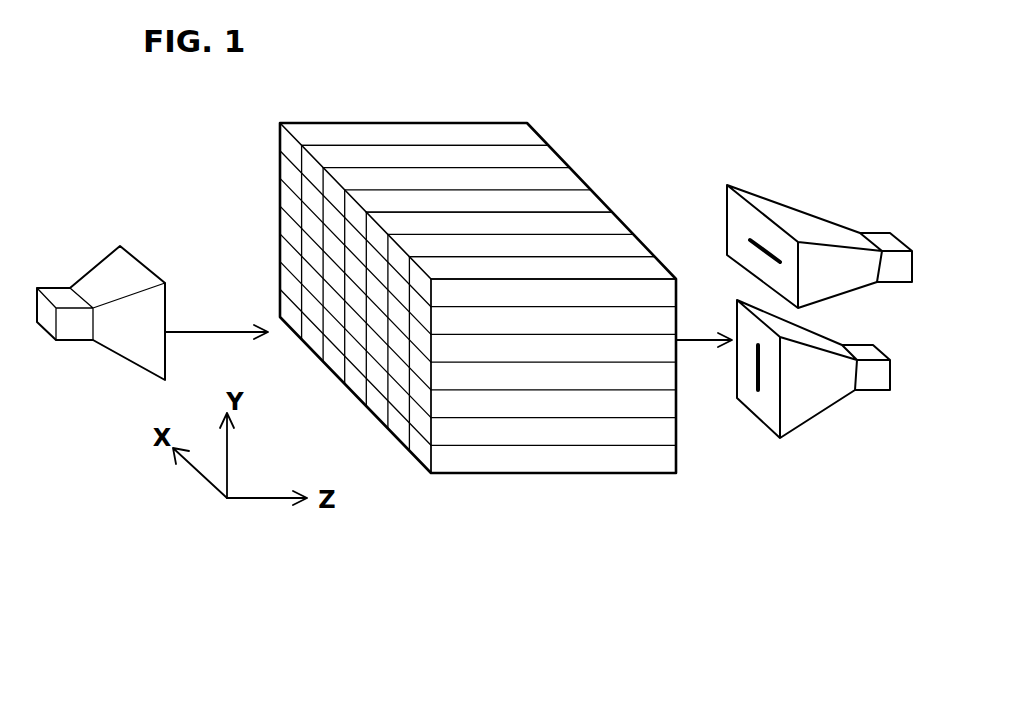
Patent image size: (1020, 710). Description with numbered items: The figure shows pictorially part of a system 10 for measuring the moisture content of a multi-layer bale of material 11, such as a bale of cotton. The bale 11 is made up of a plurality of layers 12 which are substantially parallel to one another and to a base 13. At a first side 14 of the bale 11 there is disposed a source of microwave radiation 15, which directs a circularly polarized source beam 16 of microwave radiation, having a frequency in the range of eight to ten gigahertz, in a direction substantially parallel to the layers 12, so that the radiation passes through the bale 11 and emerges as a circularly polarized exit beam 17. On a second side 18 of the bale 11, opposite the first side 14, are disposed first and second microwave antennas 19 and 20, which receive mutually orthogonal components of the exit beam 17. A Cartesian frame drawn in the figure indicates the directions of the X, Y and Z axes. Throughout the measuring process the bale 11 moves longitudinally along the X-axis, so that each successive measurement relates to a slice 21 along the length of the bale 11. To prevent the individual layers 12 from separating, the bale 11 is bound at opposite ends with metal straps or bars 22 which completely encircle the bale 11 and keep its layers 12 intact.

The system 10 is at (474, 331).
The bale of material 11 is at (538, 178).
The layers 12 is at (617, 460).
The base 13 is at (540, 473).
The first side 14 is at (284, 207).
The source of microwave radiation 15 is at (108, 277).
The source beam 16 is at (200, 330).
The exit beam 17 is at (686, 341).
The second side 18 is at (677, 455).
The first microwave antenna 19 is at (793, 223).
The second microwave antenna 20 is at (813, 403).
The slice 21 is at (420, 200).
The metal straps or bars 22 is at (498, 158).